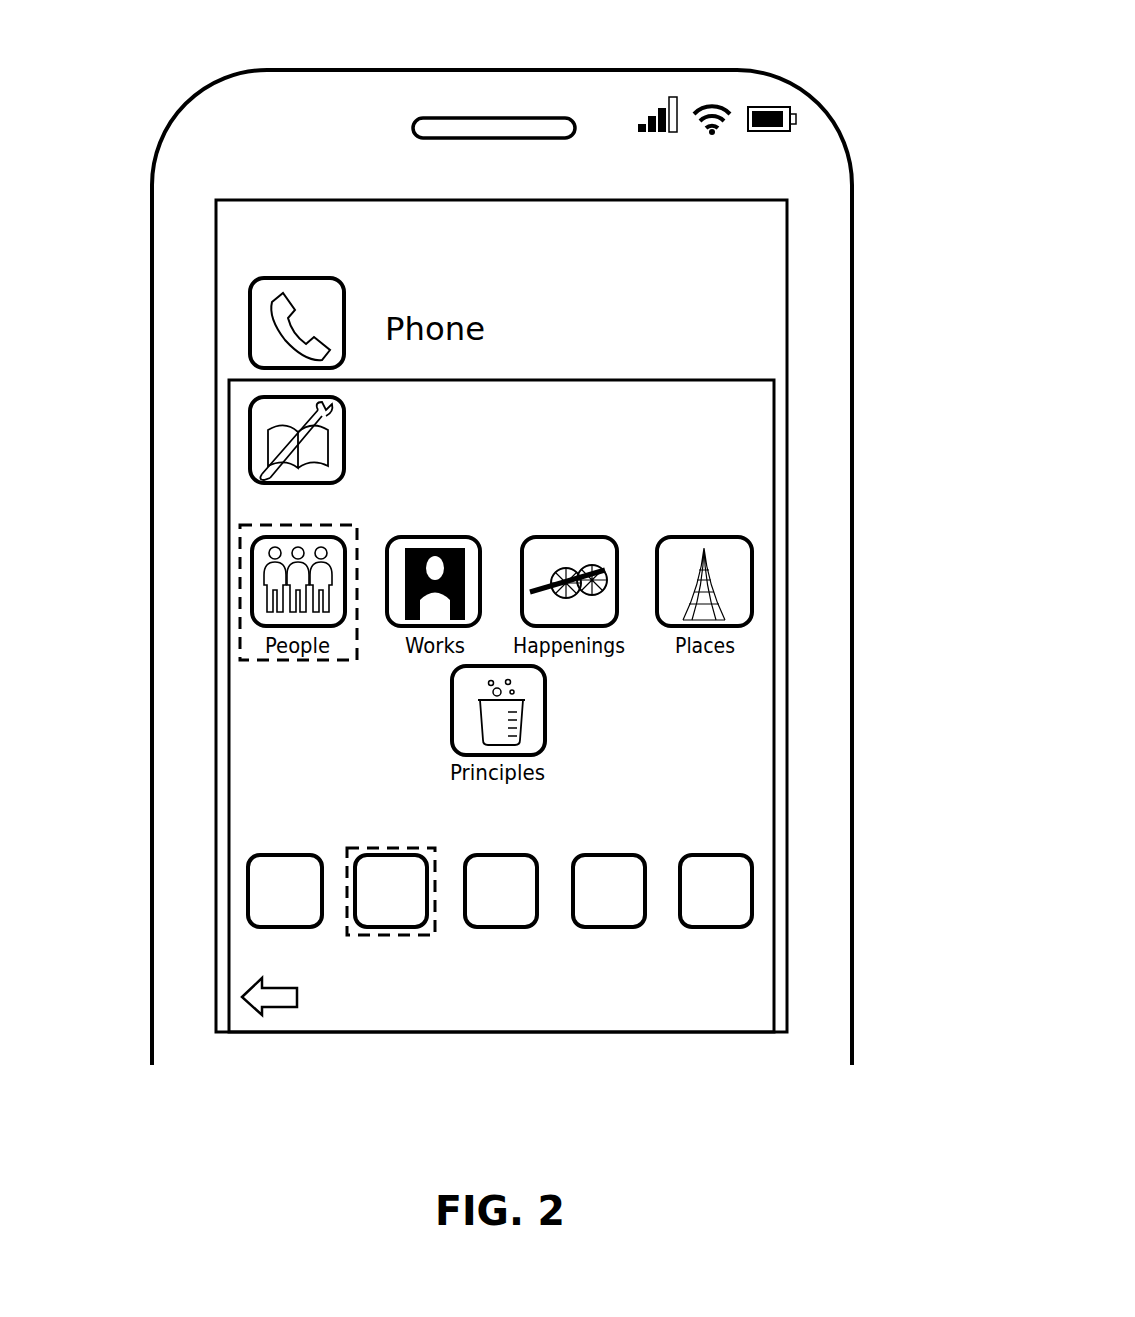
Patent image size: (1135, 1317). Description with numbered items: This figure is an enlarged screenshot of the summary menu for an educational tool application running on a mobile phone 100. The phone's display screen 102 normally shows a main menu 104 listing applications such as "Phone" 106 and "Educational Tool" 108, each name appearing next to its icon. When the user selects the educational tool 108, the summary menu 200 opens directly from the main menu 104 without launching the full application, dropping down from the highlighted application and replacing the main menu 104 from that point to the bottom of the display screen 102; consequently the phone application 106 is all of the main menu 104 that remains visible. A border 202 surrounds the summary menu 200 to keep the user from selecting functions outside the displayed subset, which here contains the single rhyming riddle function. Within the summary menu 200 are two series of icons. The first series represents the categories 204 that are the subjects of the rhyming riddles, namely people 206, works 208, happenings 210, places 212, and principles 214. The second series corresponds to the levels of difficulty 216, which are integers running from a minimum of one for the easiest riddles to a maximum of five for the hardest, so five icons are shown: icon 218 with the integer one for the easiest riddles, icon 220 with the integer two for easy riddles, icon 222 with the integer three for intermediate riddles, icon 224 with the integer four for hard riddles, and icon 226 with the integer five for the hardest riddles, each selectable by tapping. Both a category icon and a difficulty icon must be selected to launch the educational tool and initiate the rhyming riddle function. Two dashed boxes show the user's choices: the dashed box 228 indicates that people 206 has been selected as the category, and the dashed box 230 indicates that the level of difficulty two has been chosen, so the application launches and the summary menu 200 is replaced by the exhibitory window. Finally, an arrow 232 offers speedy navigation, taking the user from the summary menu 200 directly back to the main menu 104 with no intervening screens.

The mobile phone 100 is at (672, 70).
The display screen 102 is at (385, 200).
The main menu 104 is at (548, 262).
The Phone application 106 is at (250, 318).
The Educational Tool application 108 is at (250, 437).
The summary menu 200 is at (648, 443).
The border 202 is at (655, 380).
The categories 204 is at (585, 510).
The people category icon 206 is at (250, 580).
The works category icon 208 is at (413, 537).
The happenings category icon 210 is at (590, 537).
The places category icon 212 is at (752, 578).
The principles category icon 214 is at (452, 700).
The levels of difficulty 216 is at (646, 827).
The level one icon 218 is at (248, 890).
The level two icon 220 is at (357, 852).
The level three icon 222 is at (498, 927).
The level four icon 224 is at (605, 927).
The level five icon 226 is at (752, 885).
The dashed box 228 is at (262, 662).
The dashed box 230 is at (347, 930).
The arrow 232 is at (272, 1015).